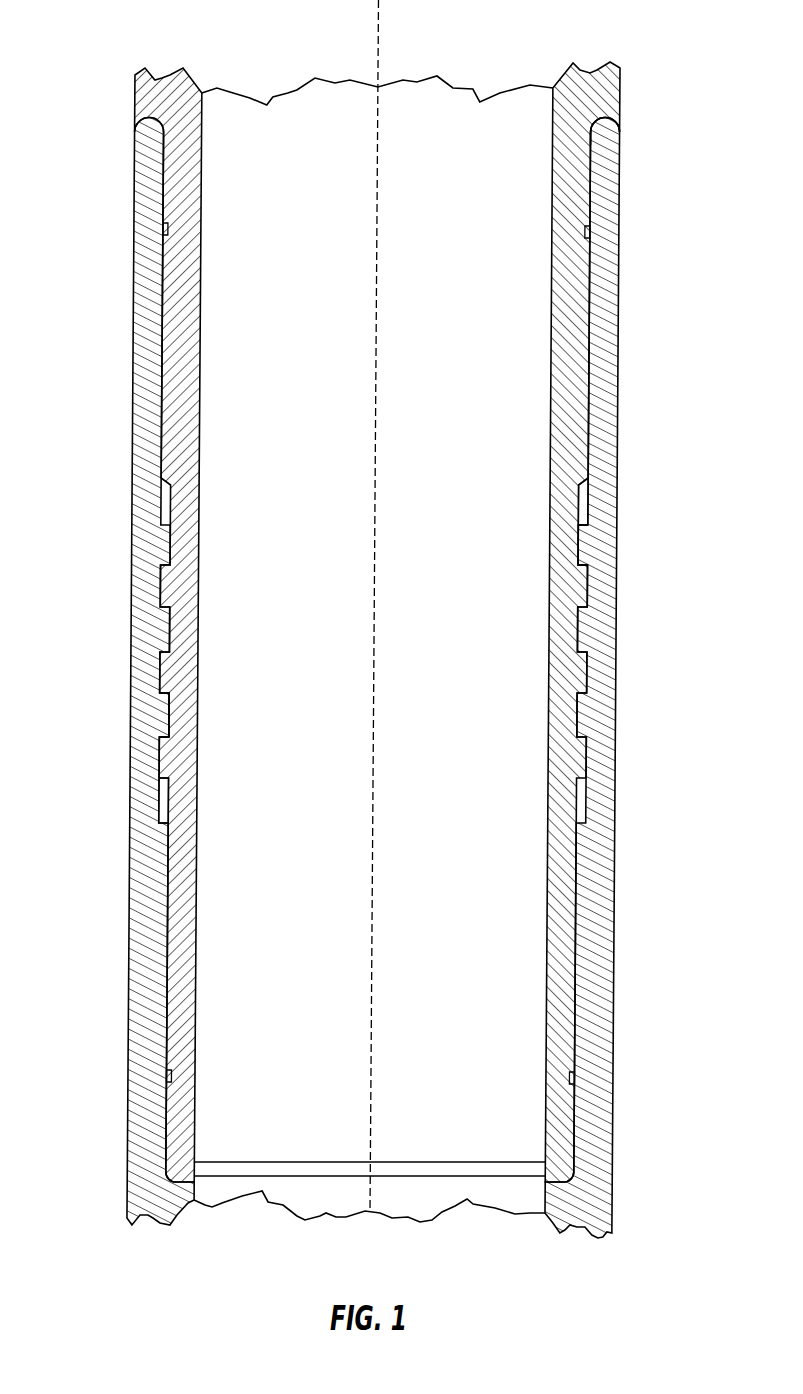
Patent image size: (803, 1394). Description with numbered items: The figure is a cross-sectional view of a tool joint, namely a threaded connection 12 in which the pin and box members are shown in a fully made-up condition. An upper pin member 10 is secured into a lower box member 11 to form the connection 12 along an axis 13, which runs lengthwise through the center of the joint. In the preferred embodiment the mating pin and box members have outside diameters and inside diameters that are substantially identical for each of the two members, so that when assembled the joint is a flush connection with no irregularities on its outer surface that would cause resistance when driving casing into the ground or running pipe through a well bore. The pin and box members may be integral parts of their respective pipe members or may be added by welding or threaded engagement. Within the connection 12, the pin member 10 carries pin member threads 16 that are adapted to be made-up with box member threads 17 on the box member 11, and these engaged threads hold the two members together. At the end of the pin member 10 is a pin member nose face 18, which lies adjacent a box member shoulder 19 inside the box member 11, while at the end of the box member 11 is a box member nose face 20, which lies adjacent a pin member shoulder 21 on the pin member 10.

The upper pin member 10 is at (135, 107).
The lower box member 11 is at (620, 1103).
The threaded connection 12 is at (500, 70).
The axis 13 is at (377, 45).
The pin member threads 16 is at (165, 757).
The box member threads 17 is at (175, 720).
The pin member nose face 18 is at (561, 1182).
The box member shoulder 19 is at (553, 1210).
The box member nose face 20 is at (615, 129).
The pin member shoulder 21 is at (605, 124).